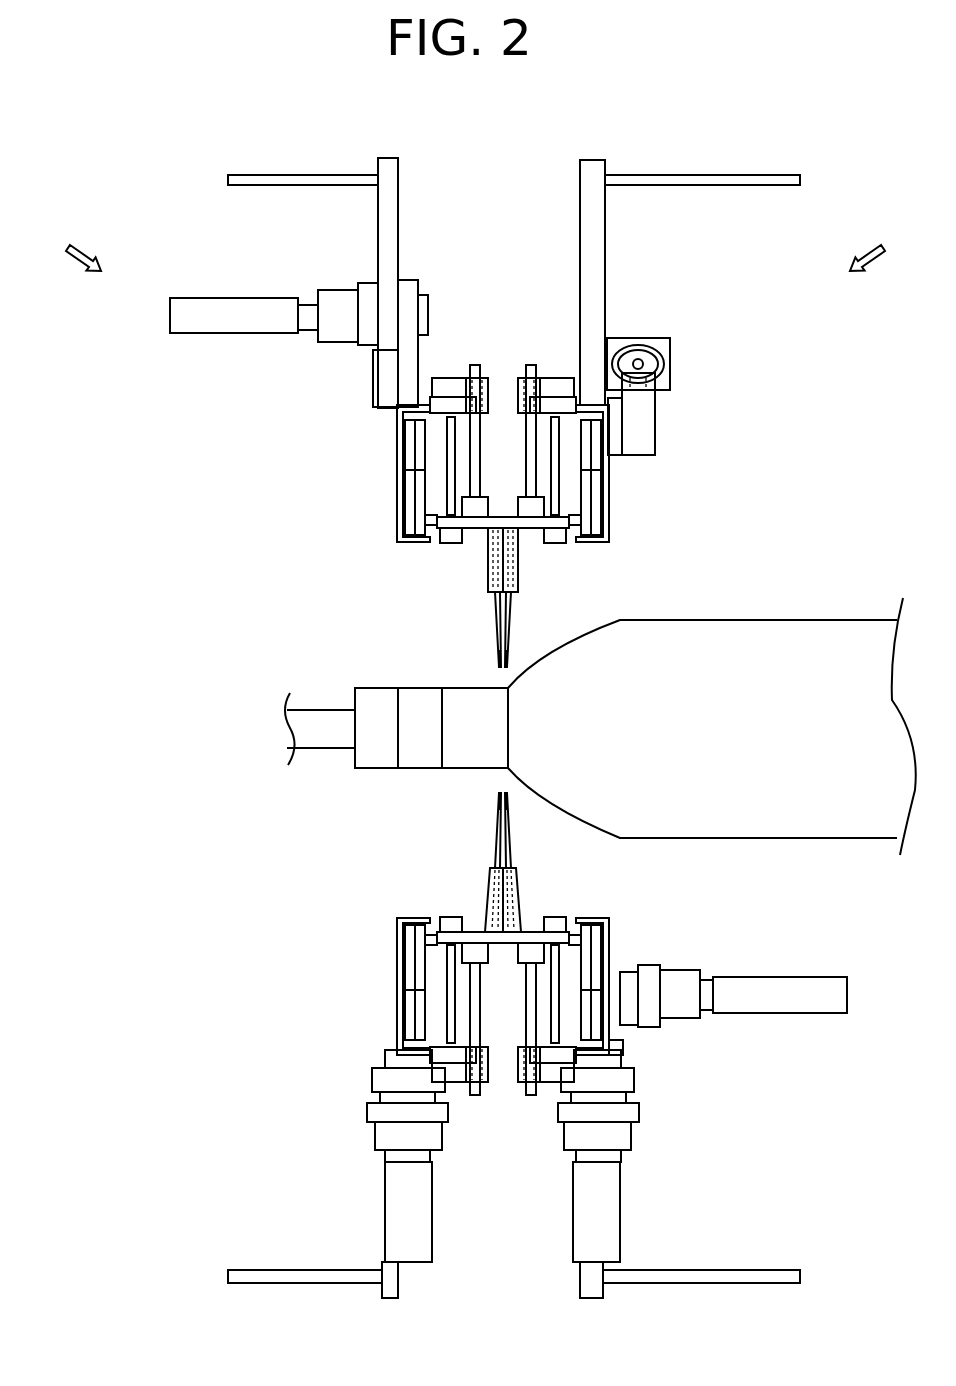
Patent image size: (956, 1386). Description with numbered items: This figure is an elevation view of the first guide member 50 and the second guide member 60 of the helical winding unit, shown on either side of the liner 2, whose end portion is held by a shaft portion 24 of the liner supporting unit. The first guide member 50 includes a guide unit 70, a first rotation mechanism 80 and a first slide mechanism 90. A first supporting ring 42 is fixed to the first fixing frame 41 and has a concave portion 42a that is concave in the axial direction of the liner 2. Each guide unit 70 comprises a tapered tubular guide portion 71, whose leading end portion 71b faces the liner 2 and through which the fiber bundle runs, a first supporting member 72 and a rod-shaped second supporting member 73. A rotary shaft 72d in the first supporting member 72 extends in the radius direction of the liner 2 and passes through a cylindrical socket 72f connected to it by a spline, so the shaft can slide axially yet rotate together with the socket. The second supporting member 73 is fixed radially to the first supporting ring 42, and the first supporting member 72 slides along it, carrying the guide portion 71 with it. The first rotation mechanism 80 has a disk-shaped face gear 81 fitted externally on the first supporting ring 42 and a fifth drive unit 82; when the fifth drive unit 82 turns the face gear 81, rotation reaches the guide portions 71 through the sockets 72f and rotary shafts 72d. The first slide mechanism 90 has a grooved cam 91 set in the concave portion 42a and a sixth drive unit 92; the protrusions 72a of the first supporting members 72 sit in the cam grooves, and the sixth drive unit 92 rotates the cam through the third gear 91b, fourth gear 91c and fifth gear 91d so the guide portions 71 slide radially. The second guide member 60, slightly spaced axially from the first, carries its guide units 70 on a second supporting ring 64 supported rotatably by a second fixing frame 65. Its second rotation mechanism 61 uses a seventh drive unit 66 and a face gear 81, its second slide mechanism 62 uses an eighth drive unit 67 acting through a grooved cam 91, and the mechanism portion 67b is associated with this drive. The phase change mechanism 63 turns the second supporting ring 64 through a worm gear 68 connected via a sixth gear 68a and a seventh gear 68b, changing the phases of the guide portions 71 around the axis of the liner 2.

The liner 2 is at (790, 615).
The shaft portion 24 is at (325, 740).
The first fixing frame 41 is at (378, 212).
The first supporting ring 42 is at (405, 548).
The concave portion 42a is at (397, 500).
The first guide member 50 is at (68, 245).
The second guide member 60 is at (881, 245).
The second rotation mechanism 61 is at (675, 1148).
The second slide mechanism 62 is at (748, 1092).
The phase change mechanism 63 is at (722, 352).
The second supporting ring 64 is at (612, 560).
The second fixing frame 65 is at (605, 212).
The seventh drive unit 66 is at (603, 1205).
The eighth drive unit 67 is at (790, 1000).
The actuator bracket 67b is at (612, 1045).
The worm gear 68 is at (640, 340).
The sixth gear 68a is at (645, 395).
The seventh gear 68b is at (640, 418).
The guide unit 70 is at (330, 642).
The guide portion 71 is at (494, 603).
The leading end portion 71b is at (478, 660).
The first supporting member 72 is at (462, 558).
The protrusion 72a is at (386, 540).
The rotary shaft 72d is at (420, 446).
The socket 72f is at (480, 385).
The second supporting member 73 is at (410, 470).
The first rotation mechanism 80 is at (330, 1148).
The face gear 81 is at (445, 385).
The fifth drive unit 82 is at (398, 1205).
The first slide mechanism 90 is at (258, 430).
The grooved cam 91 is at (415, 488).
The third gear 91b is at (410, 518).
The fourth gear 91c is at (380, 358).
The fifth gear 91d is at (418, 304).
The sixth drive unit 92 is at (228, 312).